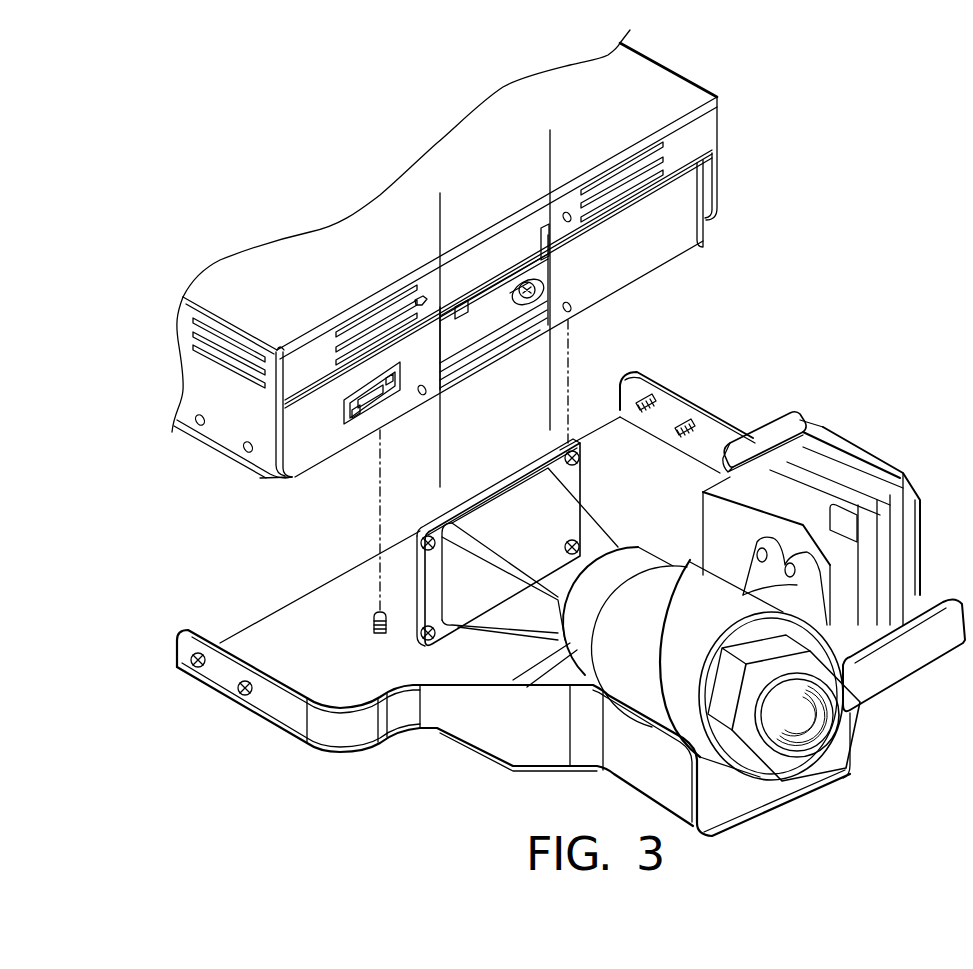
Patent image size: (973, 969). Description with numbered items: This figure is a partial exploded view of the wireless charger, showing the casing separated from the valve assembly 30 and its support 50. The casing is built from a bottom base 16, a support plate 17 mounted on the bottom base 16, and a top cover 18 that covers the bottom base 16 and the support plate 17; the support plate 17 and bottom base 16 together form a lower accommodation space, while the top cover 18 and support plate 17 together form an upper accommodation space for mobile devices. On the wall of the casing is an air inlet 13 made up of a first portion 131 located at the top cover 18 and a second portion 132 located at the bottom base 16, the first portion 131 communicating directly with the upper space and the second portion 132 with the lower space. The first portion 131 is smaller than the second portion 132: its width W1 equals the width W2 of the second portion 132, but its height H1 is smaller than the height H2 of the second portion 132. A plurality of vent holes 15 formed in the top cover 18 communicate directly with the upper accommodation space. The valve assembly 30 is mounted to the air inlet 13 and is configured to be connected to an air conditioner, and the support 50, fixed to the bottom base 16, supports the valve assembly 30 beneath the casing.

The air inlet 13 is at (697, 273).
The first portion 131 is at (537, 253).
The second portion 132 is at (532, 337).
The vent holes 15 is at (670, 153).
The bottom base 16 is at (665, 247).
The support plate 17 is at (618, 236).
The top cover 18 is at (673, 88).
The valve assembly 30 is at (626, 648).
The support 50 is at (277, 607).
The width of the first portion W1 is at (550, 135).
The width of the second portion W2 is at (550, 430).
The height of the first portion H1 is at (450, 343).
The height of the second portion H2 is at (493, 292).